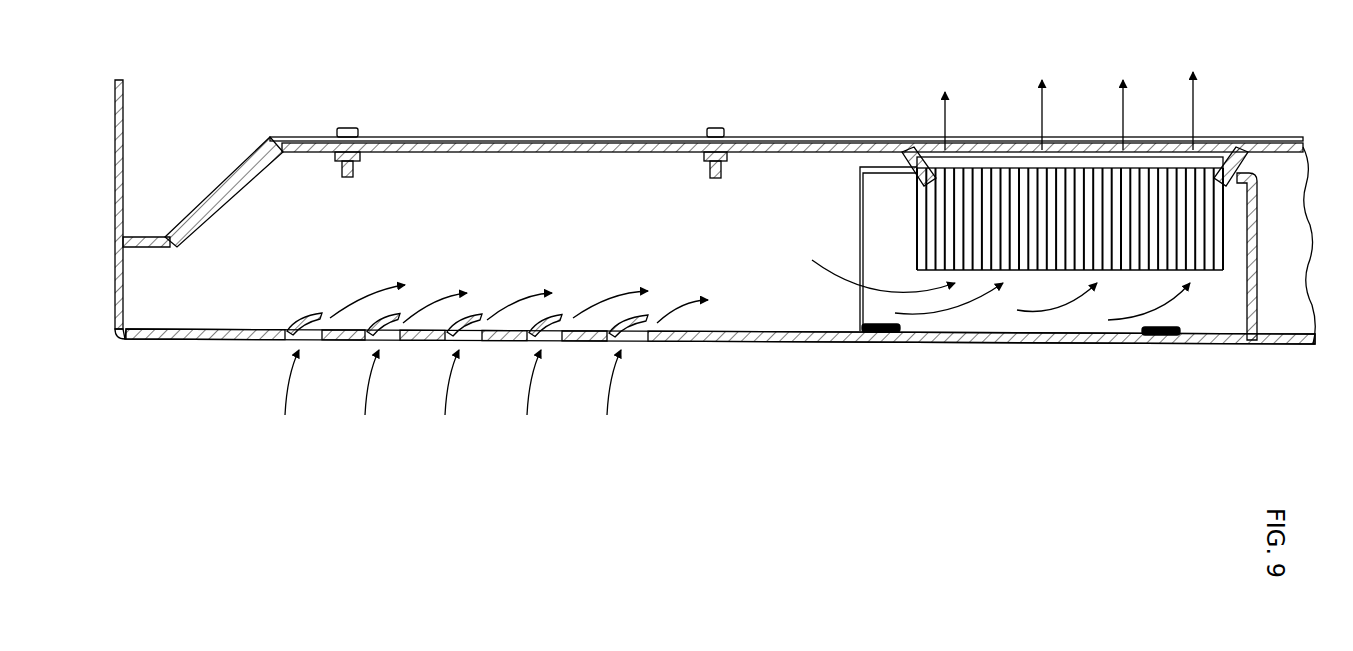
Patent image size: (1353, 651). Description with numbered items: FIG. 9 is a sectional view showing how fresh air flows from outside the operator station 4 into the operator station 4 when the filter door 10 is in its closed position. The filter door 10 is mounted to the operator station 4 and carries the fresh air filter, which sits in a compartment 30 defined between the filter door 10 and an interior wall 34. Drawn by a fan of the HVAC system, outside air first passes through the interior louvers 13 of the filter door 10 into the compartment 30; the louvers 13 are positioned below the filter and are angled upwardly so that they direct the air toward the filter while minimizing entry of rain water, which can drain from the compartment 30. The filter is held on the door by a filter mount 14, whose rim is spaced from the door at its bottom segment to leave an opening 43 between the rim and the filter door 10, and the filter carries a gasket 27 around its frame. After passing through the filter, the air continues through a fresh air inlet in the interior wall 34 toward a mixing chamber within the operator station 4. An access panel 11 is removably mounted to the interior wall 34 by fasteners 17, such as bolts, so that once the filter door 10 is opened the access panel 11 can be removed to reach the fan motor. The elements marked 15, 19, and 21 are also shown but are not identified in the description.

The operator station 4 is at (103, 338).
The filter door 10 is at (1199, 358).
The access panel 11 is at (756, 153).
The interior louvers 13 is at (416, 340).
The filter mount 14 is at (1263, 240).
The louver 15 is at (342, 338).
The fasteners 17 is at (355, 168).
The top plate vent 19 is at (1168, 138).
The mounting bracket 21 is at (1202, 143).
The gasket 27 is at (905, 150).
The compartment 30 is at (519, 270).
The interior wall 34 is at (806, 153).
The opening 43 is at (848, 242).